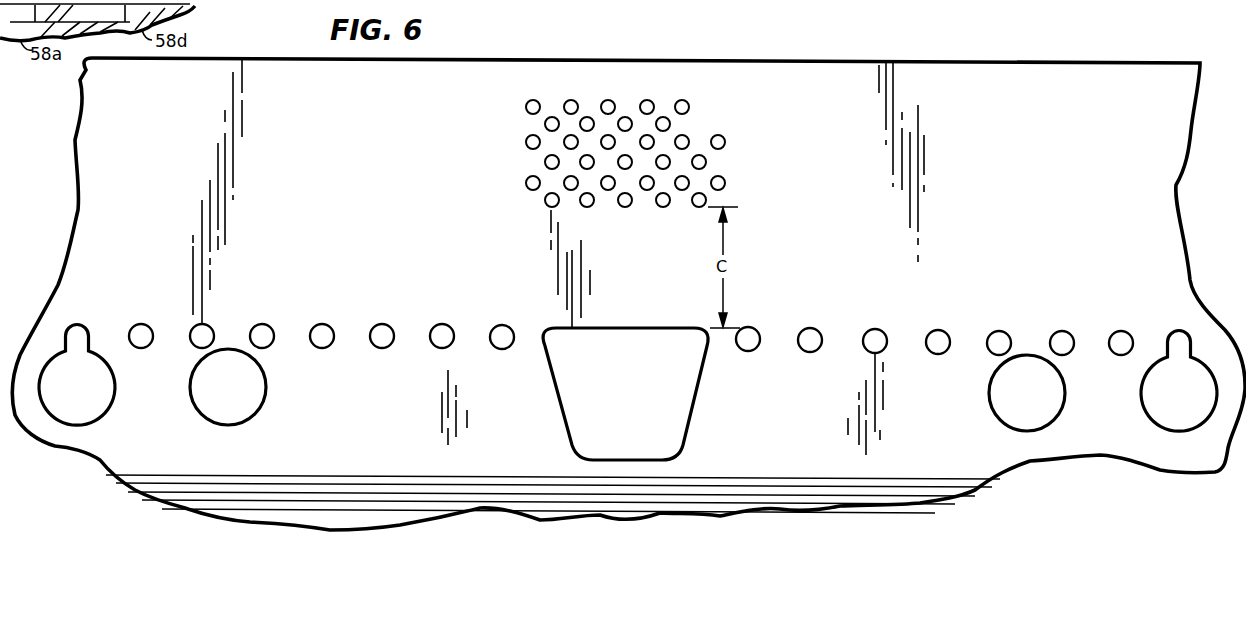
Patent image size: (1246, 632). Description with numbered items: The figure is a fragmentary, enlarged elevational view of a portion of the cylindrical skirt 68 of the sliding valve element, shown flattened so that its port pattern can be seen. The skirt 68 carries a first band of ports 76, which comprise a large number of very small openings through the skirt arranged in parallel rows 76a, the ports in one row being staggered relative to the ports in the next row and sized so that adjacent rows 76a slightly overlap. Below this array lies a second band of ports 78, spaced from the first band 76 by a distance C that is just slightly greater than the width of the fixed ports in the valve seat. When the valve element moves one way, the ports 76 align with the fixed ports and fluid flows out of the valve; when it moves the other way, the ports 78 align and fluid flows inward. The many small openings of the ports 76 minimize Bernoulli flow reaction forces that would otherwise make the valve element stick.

The cylindrical skirt 68 is at (977, 262).
The first band of ports 76 is at (607, 100).
The parallel rows 76a is at (689, 105).
The second band of ports 78 is at (88, 338).